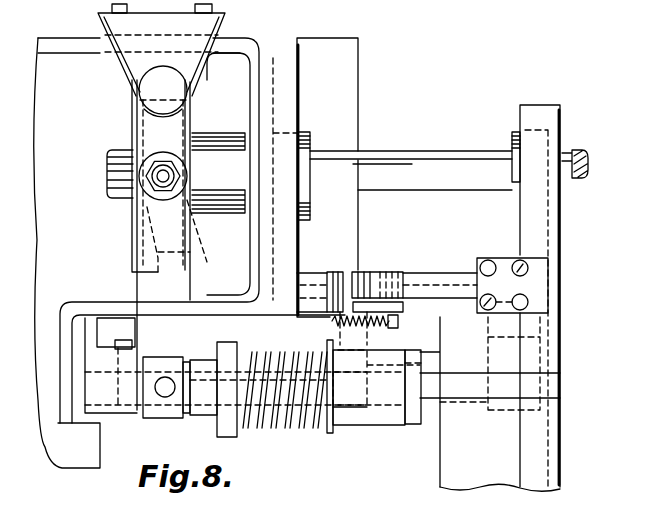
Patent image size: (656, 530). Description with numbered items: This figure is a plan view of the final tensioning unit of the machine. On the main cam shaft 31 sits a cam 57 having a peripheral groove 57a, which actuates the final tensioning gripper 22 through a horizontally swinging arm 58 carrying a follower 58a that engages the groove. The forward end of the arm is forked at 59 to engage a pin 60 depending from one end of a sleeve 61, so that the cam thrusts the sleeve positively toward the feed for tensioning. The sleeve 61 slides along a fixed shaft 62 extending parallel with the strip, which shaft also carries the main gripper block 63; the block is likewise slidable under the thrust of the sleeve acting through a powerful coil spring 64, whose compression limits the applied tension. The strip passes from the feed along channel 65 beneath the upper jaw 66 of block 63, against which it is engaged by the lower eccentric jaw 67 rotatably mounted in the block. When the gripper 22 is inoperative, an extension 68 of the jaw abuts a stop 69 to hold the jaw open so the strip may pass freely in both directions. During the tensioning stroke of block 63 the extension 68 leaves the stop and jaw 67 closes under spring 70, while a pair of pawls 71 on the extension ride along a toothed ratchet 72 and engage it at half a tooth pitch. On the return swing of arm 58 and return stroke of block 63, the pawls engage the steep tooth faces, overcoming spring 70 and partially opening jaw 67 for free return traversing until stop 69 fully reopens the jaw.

The final tensioning gripper 22 is at (357, 421).
The main cam shaft 31 is at (113, 168).
The cam 57 is at (133, 223).
The peripheral groove 57a is at (174, 226).
The horizontally swinging arm 58 is at (145, 285).
The follower 58a is at (193, 142).
The fork 59 is at (168, 414).
The pin 60 is at (168, 378).
The sleeve 61 is at (148, 354).
The fixed shaft 62 is at (428, 405).
The main gripper block 63 is at (342, 424).
The coil spring 64 is at (270, 428).
The channel 65 is at (501, 399).
The upper jaw 66 is at (378, 368).
The lower eccentric jaw 67 is at (366, 408).
The extension 68 is at (400, 303).
The stop 69 is at (343, 274).
The spring 70 is at (338, 323).
The pawls 71 is at (385, 272).
The toothed ratchet 72 is at (465, 278).